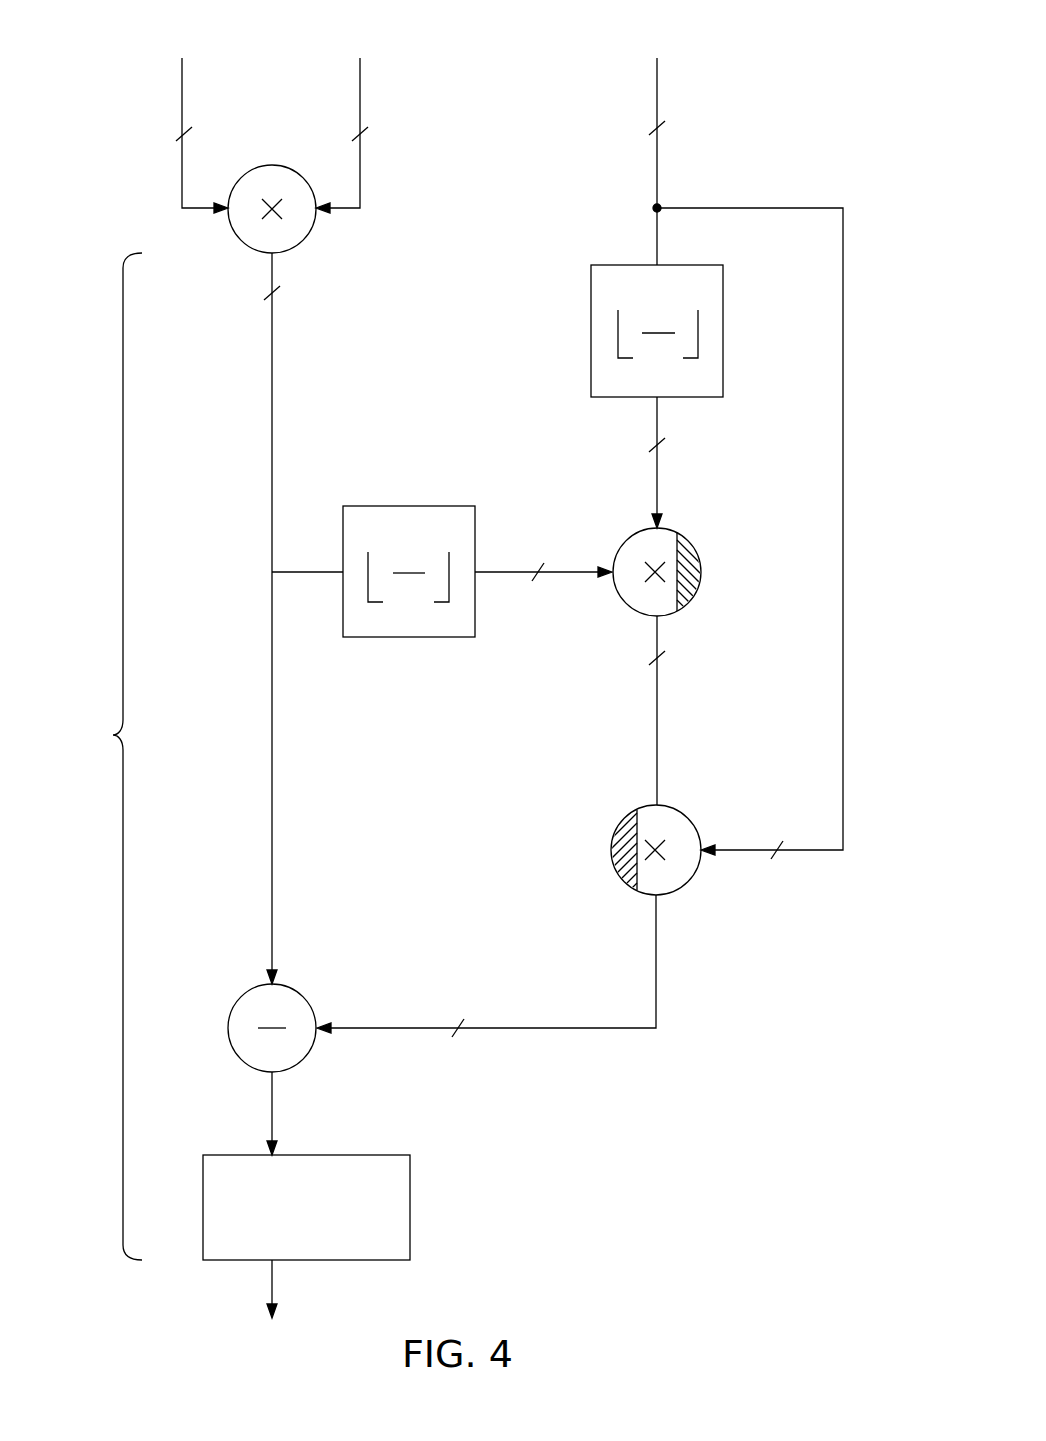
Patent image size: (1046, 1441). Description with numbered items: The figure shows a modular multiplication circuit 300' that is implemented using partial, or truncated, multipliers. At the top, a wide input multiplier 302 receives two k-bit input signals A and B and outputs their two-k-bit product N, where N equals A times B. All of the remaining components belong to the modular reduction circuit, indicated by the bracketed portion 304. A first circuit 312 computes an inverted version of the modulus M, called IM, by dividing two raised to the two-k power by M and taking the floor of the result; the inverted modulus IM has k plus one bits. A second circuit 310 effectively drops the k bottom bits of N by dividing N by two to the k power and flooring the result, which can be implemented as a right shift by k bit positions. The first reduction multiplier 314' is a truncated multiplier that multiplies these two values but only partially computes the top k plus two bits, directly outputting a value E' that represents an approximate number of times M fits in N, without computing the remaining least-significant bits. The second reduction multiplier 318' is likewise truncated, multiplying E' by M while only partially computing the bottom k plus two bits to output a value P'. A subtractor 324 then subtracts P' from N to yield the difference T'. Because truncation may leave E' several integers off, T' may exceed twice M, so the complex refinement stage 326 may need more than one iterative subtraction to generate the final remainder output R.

The modular multiplication circuit 300' is at (533, 659).
The wide input multiplier 302 is at (272, 165).
The modular reduction circuit portion 304 is at (102, 756).
The second circuit 310 is at (408, 506).
The first circuit 312 is at (591, 330).
The first reduction multiplier 314' is at (700, 581).
The second reduction multiplier 318' is at (662, 844).
The subtractor 324 is at (228, 1028).
The complex refinement stage 326 is at (410, 1215).